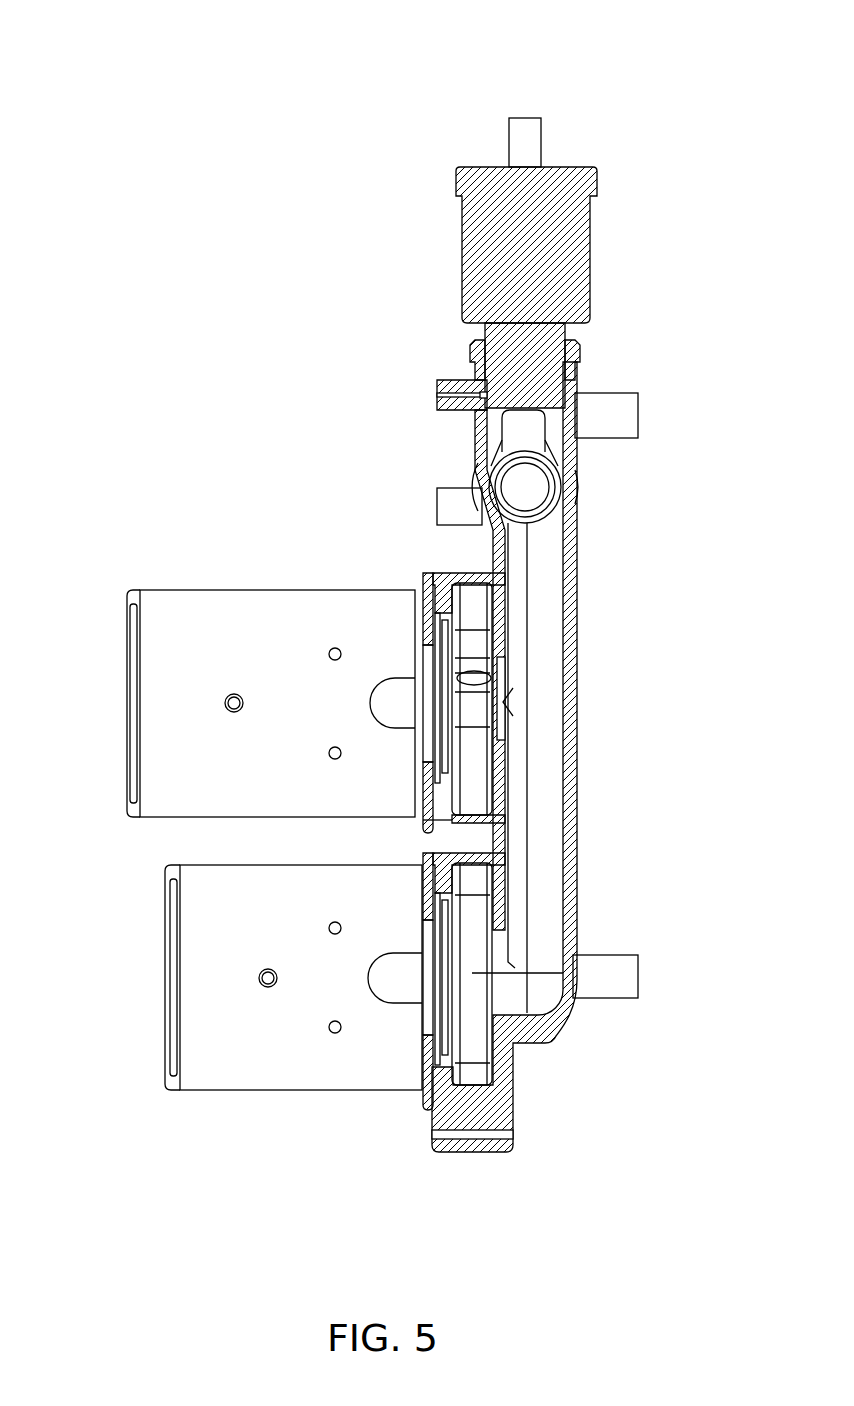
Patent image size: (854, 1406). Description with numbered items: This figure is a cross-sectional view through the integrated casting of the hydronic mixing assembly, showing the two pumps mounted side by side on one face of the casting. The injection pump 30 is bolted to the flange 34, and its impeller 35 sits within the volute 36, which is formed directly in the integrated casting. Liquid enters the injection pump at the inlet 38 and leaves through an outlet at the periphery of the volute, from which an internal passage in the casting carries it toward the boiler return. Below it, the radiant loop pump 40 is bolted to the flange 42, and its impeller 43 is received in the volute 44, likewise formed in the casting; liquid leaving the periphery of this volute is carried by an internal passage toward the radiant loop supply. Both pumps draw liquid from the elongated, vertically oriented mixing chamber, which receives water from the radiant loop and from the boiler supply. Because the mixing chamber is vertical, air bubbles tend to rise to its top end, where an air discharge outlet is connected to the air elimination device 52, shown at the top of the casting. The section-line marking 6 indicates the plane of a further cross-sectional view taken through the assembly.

The section line 6- 6 is at (525, 118).
The injection pump 30 is at (127, 692).
The flange 34 is at (482, 680).
The impeller 35 is at (450, 650).
The volute 36 is at (510, 703).
The inlet 38 is at (518, 688).
The radiant loop pump 40 is at (165, 973).
The flange 42 is at (475, 997).
The impeller 43 is at (450, 968).
The volute 44 is at (510, 984).
The air elimination device 52 is at (458, 169).